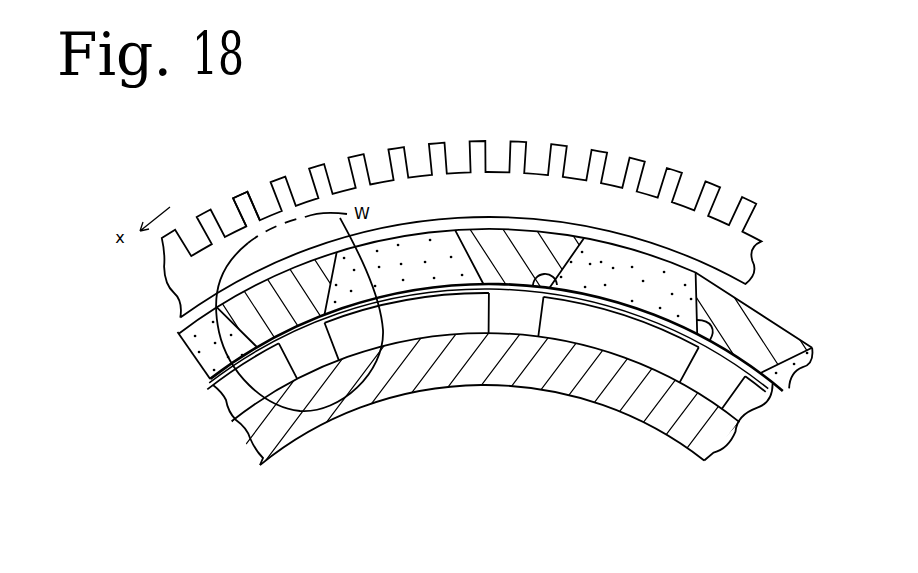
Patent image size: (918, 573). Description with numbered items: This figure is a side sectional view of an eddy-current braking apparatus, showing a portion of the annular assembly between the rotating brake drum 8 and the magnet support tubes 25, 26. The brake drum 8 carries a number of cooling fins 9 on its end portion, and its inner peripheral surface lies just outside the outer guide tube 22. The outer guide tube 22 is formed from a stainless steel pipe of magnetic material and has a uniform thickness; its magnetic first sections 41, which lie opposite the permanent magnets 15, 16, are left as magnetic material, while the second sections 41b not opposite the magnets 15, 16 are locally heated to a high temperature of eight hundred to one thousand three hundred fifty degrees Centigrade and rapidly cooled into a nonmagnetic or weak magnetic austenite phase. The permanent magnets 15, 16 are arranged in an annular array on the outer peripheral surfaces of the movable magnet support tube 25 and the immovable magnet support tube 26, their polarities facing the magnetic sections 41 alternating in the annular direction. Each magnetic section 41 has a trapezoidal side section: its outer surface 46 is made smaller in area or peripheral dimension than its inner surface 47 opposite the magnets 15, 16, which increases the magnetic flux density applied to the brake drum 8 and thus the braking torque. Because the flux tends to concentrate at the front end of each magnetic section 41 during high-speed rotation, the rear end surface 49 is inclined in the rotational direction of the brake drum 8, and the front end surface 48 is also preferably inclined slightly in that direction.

The brake drum 8 is at (199, 262).
The cooling fins 9 is at (246, 201).
The permanent magnets 15 is at (279, 394).
The permanent magnets 16 is at (486, 414).
The outer guide tube 22 is at (178, 359).
The movable magnet support tube 25 is at (347, 411).
The immovable magnet support tube 26 is at (482, 422).
The magnetic first section 41 is at (388, 252).
The second section 41b is at (503, 250).
The outer surface 46 is at (667, 263).
The inner surface 47 is at (647, 318).
The front end surface 48 is at (548, 267).
The rear end surface 49 is at (704, 340).